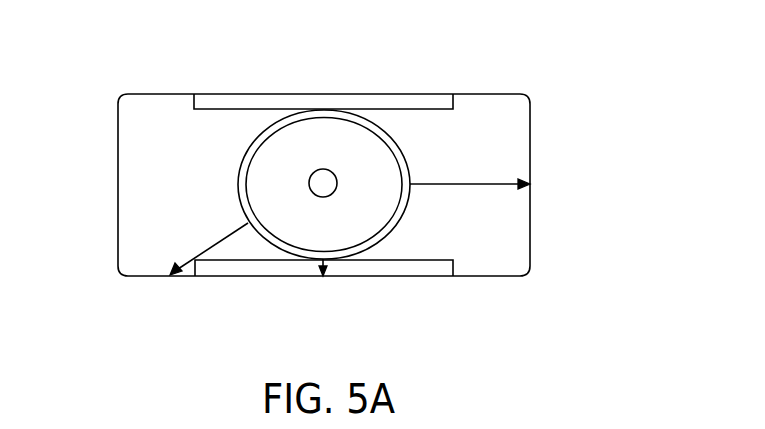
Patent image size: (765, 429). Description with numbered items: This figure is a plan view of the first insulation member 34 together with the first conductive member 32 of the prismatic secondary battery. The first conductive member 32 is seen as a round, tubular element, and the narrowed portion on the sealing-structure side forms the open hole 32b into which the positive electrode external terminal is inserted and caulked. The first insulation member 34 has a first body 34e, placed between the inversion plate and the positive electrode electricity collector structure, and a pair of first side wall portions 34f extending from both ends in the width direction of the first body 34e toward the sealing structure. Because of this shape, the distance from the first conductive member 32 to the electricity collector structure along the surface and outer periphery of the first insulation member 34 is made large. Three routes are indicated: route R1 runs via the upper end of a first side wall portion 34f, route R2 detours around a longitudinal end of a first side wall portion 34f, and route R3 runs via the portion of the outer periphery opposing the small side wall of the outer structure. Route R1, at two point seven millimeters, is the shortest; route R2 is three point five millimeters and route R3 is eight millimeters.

The first conductive member 32 is at (398, 215).
The open hole 32b is at (322, 181).
The first insulation member 34 is at (545, 127).
The first body 34e is at (502, 103).
The first side wall portion 34f is at (376, 95).
The route R1 is at (323, 262).
The route R2 is at (218, 243).
The route R3 is at (483, 184).